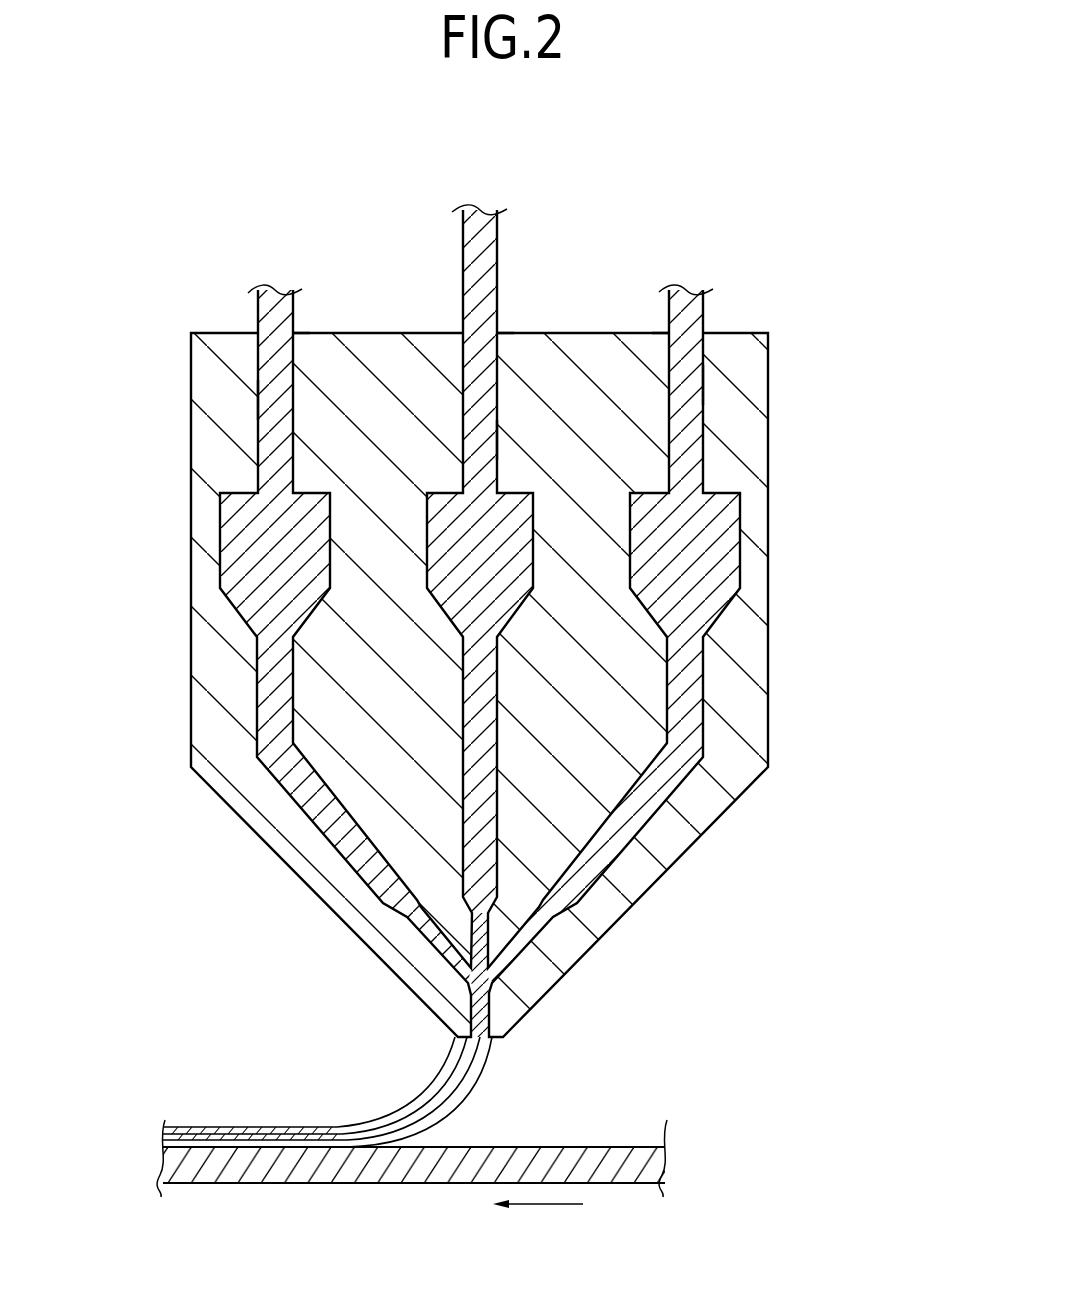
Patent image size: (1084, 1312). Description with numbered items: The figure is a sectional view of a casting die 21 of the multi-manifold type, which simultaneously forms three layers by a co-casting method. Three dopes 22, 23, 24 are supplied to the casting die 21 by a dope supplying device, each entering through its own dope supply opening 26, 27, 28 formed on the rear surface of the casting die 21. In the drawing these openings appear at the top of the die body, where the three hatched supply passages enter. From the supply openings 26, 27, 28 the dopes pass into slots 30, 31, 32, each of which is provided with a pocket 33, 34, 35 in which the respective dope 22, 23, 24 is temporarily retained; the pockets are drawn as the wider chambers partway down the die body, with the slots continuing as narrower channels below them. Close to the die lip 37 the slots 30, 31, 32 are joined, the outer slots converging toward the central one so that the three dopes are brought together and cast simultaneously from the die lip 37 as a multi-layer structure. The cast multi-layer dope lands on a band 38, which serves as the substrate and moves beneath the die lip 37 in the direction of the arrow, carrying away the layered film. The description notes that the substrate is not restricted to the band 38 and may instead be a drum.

The casting die 21 is at (782, 689).
The dope 22 is at (705, 297).
The dope 23 is at (497, 218).
The dope 24 is at (265, 297).
The dope supply opening 26 is at (667, 327).
The dope supply opening 27 is at (498, 330).
The dope supply opening 28 is at (295, 333).
The slot 30 is at (700, 382).
The slot 31 is at (487, 440).
The slot 32 is at (268, 398).
The pocket 33 is at (735, 523).
The pocket 34 is at (528, 550).
The pocket 35 is at (222, 540).
The die lip 37 is at (520, 1023).
The band 38 is at (545, 1147).